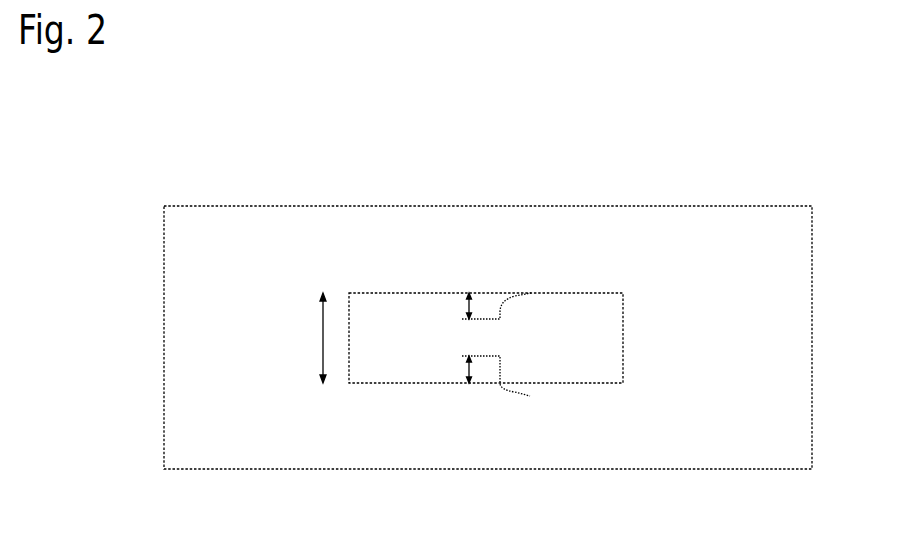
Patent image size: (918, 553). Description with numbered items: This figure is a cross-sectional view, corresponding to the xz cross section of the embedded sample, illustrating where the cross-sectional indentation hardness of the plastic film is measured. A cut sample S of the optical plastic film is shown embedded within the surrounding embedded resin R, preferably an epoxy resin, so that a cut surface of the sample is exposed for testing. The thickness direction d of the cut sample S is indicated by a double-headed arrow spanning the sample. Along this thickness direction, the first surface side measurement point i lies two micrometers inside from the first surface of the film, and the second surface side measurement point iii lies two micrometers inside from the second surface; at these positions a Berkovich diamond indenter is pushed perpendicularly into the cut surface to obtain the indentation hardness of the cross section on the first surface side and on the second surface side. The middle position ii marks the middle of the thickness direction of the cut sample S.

The embedded resin R is at (677, 206).
The cut sample of plastic film S is at (608, 383).
The thickness direction of cut sample of plastic film d is at (322, 333).
The measurement point on the first surface side i is at (531, 293).
The middle position in the thickness direction ii is at (498, 337).
The measurement point on the second surface side iii is at (541, 401).